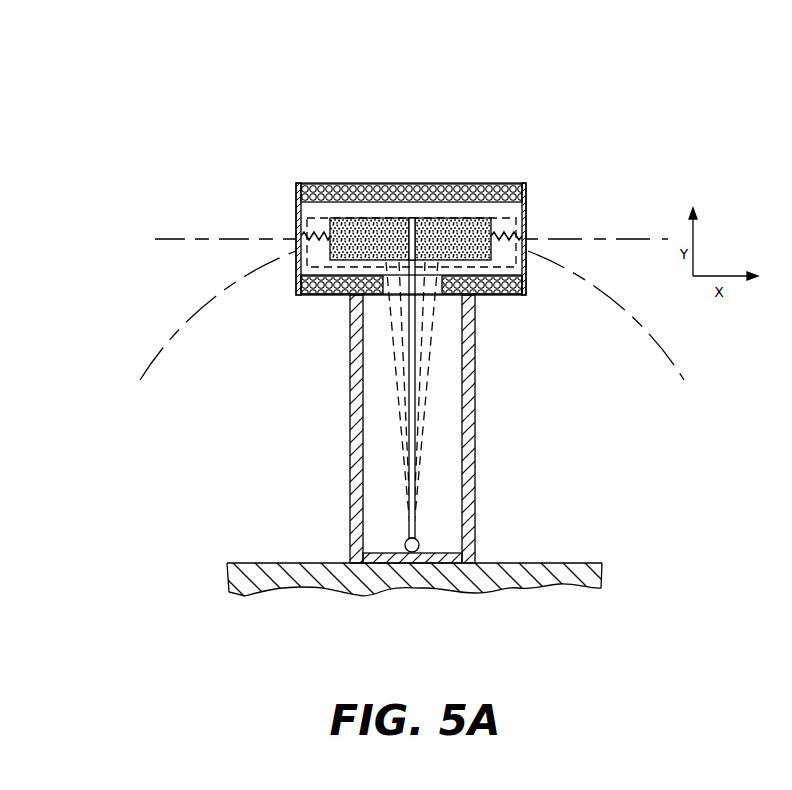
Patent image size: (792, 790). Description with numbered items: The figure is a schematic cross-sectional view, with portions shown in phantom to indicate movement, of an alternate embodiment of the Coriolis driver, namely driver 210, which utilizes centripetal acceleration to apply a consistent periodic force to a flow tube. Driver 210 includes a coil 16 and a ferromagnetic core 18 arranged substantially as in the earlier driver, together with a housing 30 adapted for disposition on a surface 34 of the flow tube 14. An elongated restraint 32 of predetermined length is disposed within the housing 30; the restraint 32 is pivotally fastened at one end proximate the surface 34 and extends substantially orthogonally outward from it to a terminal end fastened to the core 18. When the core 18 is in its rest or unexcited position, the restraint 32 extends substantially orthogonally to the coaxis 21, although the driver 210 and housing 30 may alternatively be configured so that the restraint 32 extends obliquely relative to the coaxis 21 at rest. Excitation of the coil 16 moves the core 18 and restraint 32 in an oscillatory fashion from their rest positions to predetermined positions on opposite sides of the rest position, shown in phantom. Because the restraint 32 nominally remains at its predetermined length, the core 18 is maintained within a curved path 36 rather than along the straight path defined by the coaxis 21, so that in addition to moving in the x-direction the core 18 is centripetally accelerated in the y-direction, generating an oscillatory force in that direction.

The driver 210 is at (282, 128).
The flow tube 14 is at (312, 575).
The surface 34 is at (252, 563).
The housing 30 is at (358, 467).
The restraint 32 is at (412, 402).
The coil 16 is at (299, 192).
The ferromagnetic core 18 is at (340, 225).
The coaxis 21 is at (177, 239).
The curved path 36 is at (175, 332).